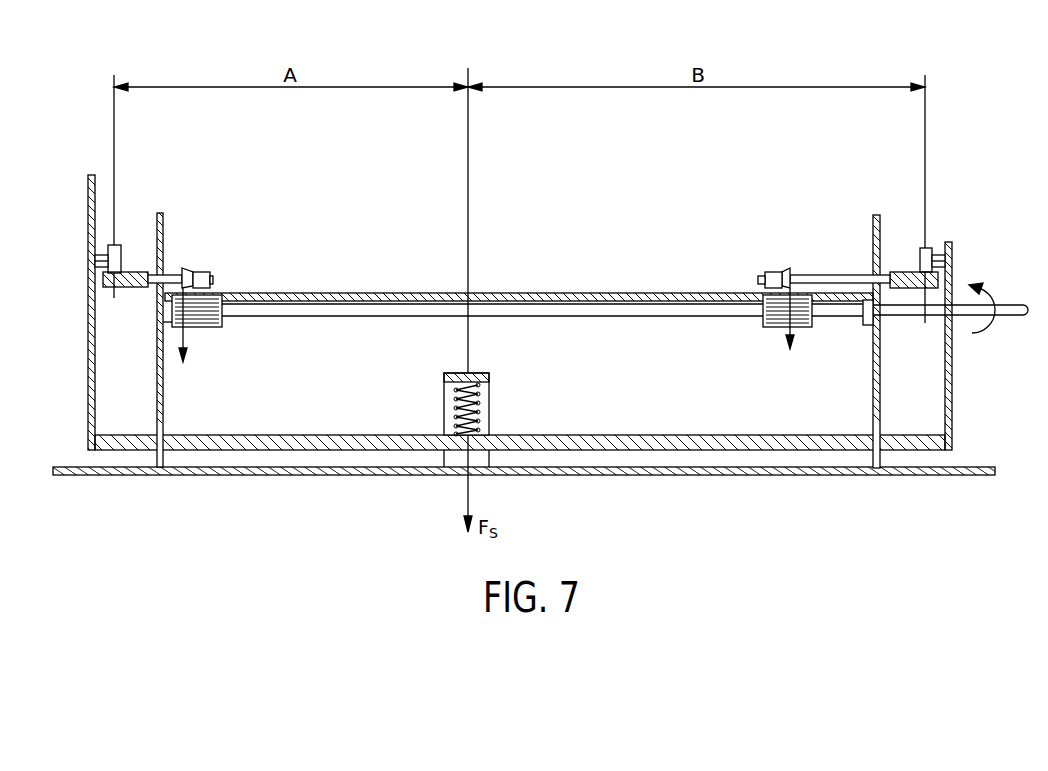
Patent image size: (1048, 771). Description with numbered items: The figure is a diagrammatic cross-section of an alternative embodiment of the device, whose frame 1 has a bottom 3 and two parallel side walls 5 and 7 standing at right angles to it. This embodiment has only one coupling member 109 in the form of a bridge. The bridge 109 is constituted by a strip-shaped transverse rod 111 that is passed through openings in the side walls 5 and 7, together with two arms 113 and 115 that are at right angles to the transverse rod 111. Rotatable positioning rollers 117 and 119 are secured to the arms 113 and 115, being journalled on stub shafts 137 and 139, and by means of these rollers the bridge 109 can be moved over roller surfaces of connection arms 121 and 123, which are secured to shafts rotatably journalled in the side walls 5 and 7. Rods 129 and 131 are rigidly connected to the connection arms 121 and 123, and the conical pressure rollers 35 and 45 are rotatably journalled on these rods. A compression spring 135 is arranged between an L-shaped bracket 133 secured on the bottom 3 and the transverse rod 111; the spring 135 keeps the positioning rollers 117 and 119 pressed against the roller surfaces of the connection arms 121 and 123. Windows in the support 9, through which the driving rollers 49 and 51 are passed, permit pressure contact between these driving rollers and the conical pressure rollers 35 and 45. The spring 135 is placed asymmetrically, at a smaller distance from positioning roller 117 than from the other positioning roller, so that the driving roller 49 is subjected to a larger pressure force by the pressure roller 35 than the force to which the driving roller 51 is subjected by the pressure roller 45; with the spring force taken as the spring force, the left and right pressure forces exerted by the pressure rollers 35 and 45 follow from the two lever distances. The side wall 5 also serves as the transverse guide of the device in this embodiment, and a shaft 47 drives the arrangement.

The frame 1 is at (196, 478).
The bottom 3 is at (640, 477).
The side wall 5 is at (164, 400).
The side wall 7 is at (873, 392).
The support 9 is at (353, 304).
The conical pressure roller 35 is at (191, 279).
The conical pressure roller 45 is at (787, 272).
The drive shaft 47 is at (1016, 316).
The driving roller 49 is at (220, 328).
The driving roller 51 is at (766, 333).
The coupling member 109 is at (529, 356).
The transverse rod 111 is at (648, 434).
The arm 113 is at (88, 362).
The arm 115 is at (953, 380).
The positioning roller 117 is at (118, 258).
The positioning roller 119 is at (920, 250).
The connection arm 121 is at (132, 285).
The connection arm 123 is at (912, 289).
The rod 129 is at (177, 278).
The rod 131 is at (825, 278).
The L-shaped bracket 133 is at (480, 377).
The compression spring 135 is at (480, 402).
The stub shaft 137 is at (101, 259).
The stub shaft 139 is at (940, 262).